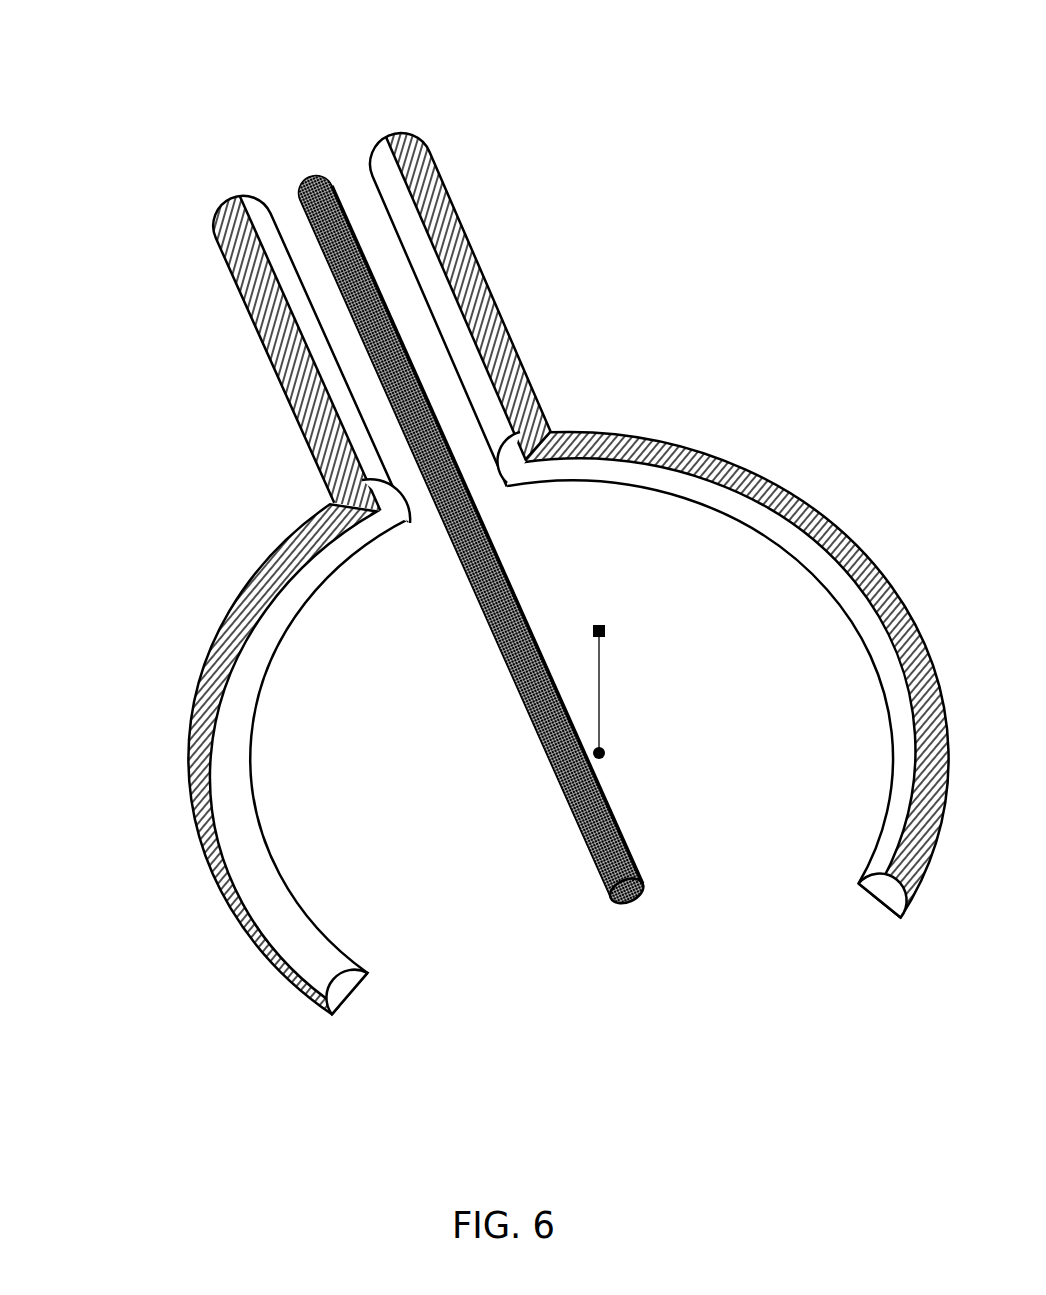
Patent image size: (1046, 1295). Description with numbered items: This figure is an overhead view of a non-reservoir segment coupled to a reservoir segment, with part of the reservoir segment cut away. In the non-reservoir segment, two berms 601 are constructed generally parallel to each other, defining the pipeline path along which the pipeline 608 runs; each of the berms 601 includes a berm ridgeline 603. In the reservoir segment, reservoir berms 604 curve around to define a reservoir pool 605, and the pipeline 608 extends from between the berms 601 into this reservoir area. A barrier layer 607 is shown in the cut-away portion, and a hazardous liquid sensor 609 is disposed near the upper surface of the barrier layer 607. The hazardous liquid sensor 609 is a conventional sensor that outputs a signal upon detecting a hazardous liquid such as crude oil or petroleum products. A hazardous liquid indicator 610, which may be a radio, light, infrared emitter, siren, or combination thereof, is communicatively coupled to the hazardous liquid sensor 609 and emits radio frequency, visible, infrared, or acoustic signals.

The berm 601 is at (373, 334).
The berm ridgeline 603 is at (503, 320).
The reservoir berm 604 is at (502, 511).
The reservoir pool 605 is at (403, 763).
The barrier layer 607 is at (397, 198).
The pipeline 608 is at (587, 850).
The hazardous liquid sensor 609 is at (602, 758).
The hazardous liquid indicator 610 is at (603, 637).